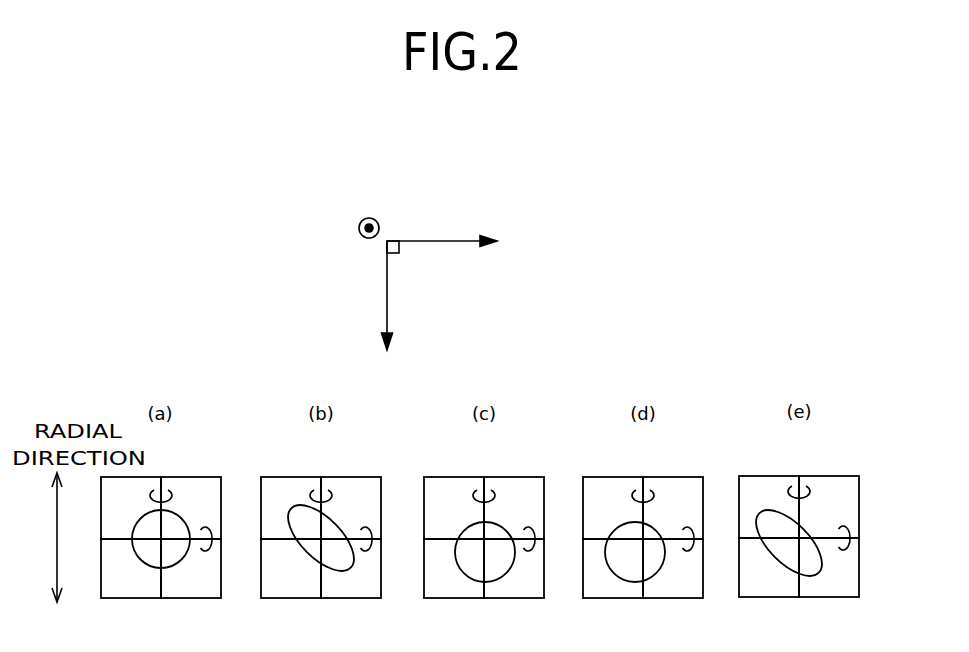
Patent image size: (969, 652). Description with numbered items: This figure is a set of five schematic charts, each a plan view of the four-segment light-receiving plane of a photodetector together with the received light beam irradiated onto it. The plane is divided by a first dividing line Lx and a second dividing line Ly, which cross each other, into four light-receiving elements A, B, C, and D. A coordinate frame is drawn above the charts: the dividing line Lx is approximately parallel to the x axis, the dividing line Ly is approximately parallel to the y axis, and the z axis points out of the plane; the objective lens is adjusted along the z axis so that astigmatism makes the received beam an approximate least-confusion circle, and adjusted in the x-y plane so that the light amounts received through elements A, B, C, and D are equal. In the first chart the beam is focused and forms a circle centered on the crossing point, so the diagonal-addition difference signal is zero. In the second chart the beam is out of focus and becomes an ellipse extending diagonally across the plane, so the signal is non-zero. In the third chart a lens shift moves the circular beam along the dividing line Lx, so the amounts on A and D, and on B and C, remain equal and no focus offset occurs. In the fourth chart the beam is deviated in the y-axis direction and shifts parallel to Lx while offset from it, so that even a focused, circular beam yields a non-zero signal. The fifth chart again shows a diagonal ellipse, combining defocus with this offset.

The first dividing line Lx is at (172, 485).
The second dividing line Ly is at (213, 548).
The light-receiving element A is at (450, 507).
The light-receiving element B is at (450, 568).
The light-receiving element C is at (510, 568).
The light-receiving element D is at (510, 507).
The x axis x is at (387, 310).
The y axis y is at (449, 241).
The z axis z is at (380, 228).